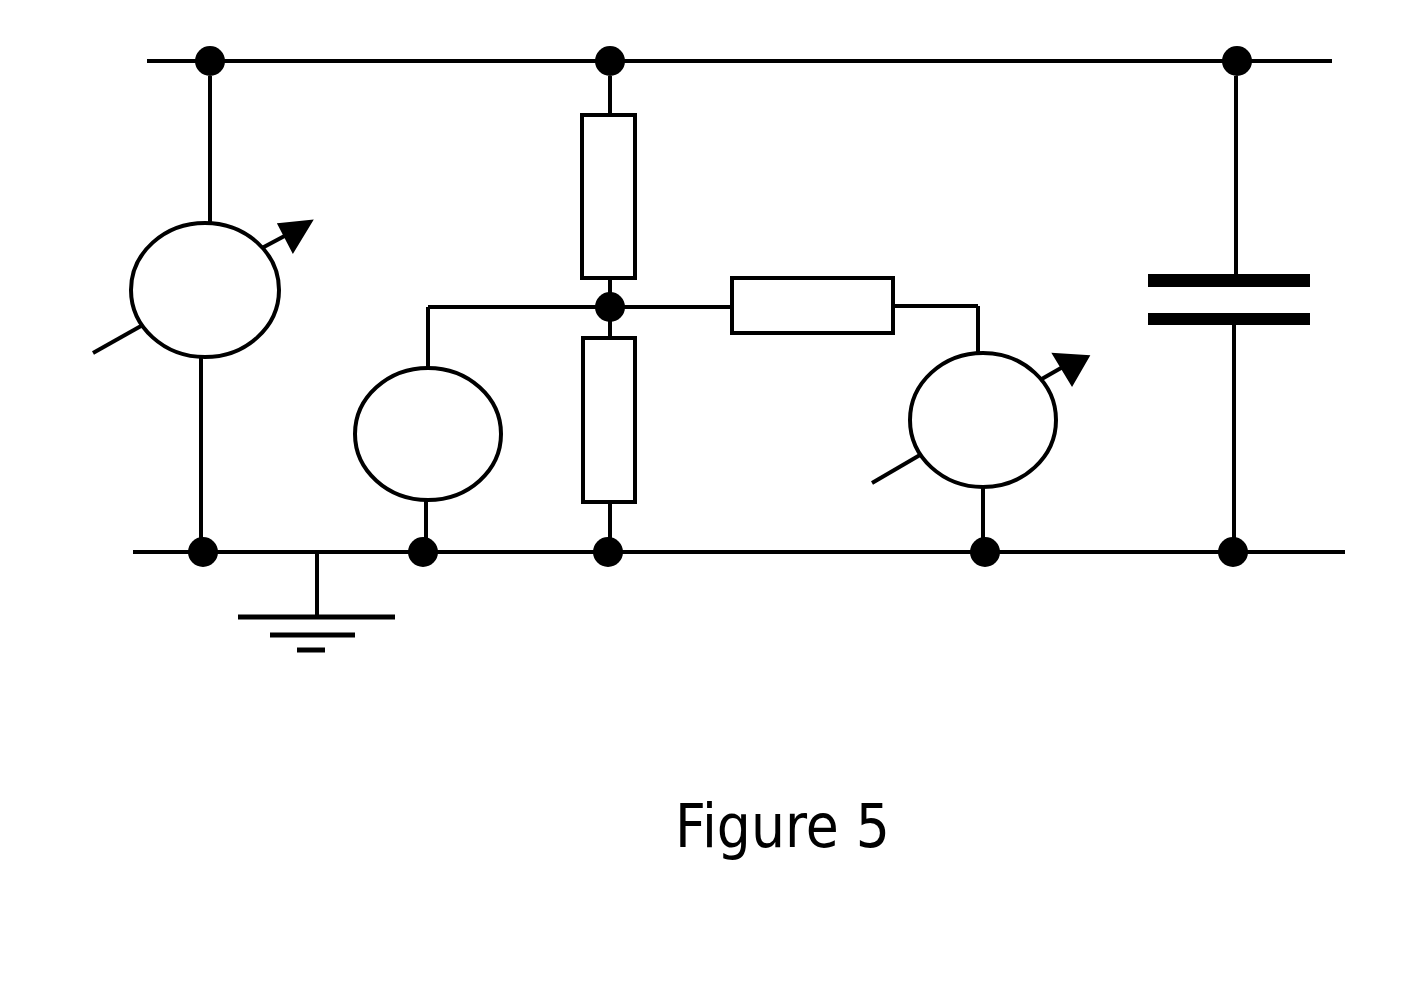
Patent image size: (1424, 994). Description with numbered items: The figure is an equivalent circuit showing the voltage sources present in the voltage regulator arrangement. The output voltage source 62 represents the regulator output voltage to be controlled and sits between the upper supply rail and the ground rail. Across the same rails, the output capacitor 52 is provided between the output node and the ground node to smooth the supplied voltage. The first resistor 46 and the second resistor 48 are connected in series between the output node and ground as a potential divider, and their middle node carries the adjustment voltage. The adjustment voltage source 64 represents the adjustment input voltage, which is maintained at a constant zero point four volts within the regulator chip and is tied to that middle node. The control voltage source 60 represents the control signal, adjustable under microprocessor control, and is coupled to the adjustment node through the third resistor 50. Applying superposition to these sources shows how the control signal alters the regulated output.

The first resistor R2 46 is at (643, 155).
The second resistor R1 48 is at (648, 470).
The resistor R3 50 is at (840, 268).
The output capacitor 52 is at (1285, 274).
The voltage source 60 is at (1052, 432).
The voltage source 62 is at (153, 238).
The voltage source 64 is at (355, 425).